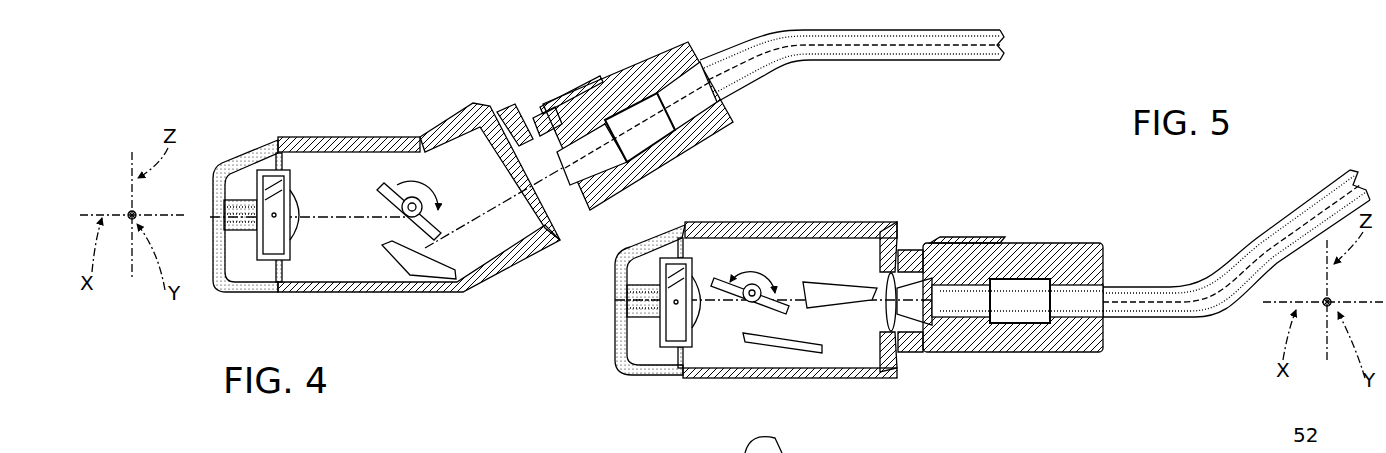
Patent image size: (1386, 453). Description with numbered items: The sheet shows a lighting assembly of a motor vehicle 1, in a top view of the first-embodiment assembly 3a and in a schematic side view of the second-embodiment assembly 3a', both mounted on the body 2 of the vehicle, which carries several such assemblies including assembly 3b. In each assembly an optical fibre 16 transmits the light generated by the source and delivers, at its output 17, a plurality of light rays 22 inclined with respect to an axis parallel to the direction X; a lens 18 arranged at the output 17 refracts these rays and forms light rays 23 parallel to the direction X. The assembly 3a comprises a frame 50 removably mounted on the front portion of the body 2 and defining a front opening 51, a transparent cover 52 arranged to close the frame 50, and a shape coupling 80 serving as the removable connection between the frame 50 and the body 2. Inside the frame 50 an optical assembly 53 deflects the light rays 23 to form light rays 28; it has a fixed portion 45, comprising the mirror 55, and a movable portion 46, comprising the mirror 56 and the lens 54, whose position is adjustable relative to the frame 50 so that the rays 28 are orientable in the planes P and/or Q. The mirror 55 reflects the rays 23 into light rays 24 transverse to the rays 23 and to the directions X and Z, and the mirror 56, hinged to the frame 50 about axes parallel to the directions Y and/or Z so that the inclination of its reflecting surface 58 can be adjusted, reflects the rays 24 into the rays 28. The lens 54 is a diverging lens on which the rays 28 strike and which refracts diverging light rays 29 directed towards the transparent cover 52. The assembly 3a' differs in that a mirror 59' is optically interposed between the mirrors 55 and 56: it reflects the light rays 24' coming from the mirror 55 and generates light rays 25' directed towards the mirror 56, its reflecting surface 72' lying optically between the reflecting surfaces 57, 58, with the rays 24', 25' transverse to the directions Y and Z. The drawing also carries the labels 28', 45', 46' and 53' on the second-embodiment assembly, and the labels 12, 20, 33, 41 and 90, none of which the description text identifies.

In FIG. 5, the motor vehicle 1 is at (1135, 428).
In FIG. 4, the body 2 is at (708, 160).
In FIG. 5, the body 2 is at (1032, 236).
In FIG. 4, the lighting assembly 3a is at (480, 63).
In FIG. 5, the lighting assembly 3a' is at (856, 158).
In FIG. 4, the assembly 3b is at (518, 452).
In FIG. 5, the mouthpiece 12 is at (1007, 452).
In FIG. 4, the optical fibre 16 is at (893, 48).
In FIG. 5, the optical fibre 16 is at (1239, 257).
In FIG. 4, the output 17 is at (570, 222).
In FIG. 5, the output 17 is at (915, 355).
In FIG. 4, the lens 18 is at (518, 224).
In FIG. 5, the lens 18 is at (900, 334).
In FIG. 4, the chamber 20 is at (428, 450).
In FIG. 4, the light rays 22 is at (532, 116).
In FIG. 5, the light rays 22 is at (930, 238).
In FIG. 4, the light rays 23 is at (477, 220).
In FIG. 5, the light rays 23 is at (878, 300).
In FIG. 4, the light rays 24 is at (378, 230).
In FIG. 5, the light rays 24' is at (835, 360).
In FIG. 5, the light rays 25' is at (782, 369).
In FIG. 4, the light rays 28 is at (335, 278).
In FIG. 5, the axis 28' is at (682, 361).
In FIG. 4, the light rays 29 is at (242, 192).
In FIG. 5, the light rays 29 is at (645, 283).
In FIG. 5, the element 33 is at (810, 452).
In FIG. 5, the element 41 is at (877, 444).
In FIG. 4, the fixed portion 45 is at (379, 300).
In FIG. 5, the flap 45' is at (877, 230).
In FIG. 4, the movable portion 46 is at (463, 207).
In FIG. 5, the arrow 46' is at (857, 368).
In FIG. 4, the frame 50 is at (334, 134).
In FIG. 5, the frame 50 is at (720, 224).
In FIG. 4, the front opening 51 is at (268, 252).
In FIG. 5, the front opening 51 is at (680, 303).
In FIG. 4, the transparent cover 52 is at (218, 245).
In FIG. 5, the transparent cover 52 is at (622, 323).
In FIG. 4, the optical assembly 53 is at (409, 136).
In FIG. 5, the valve arm 53' is at (756, 247).
In FIG. 4, the lens 54 is at (280, 176).
In FIG. 5, the lens 54 is at (663, 267).
In FIG. 4, the mirror 55 is at (443, 280).
In FIG. 5, the mirror 55 is at (810, 281).
In FIG. 4, the mirror 56 is at (386, 194).
In FIG. 5, the mirror 56 is at (716, 280).
In FIG. 4, the reflecting surface 57 is at (452, 256).
In FIG. 5, the reflecting surface 57 is at (852, 330).
In FIG. 4, the reflecting surface 58 is at (381, 205).
In FIG. 5, the reflecting surface 58 is at (784, 326).
In FIG. 5, the mirror 59' is at (757, 386).
In FIG. 5, the reflecting surface 72' is at (810, 288).
In FIG. 4, the shape coupling 80 is at (524, 138).
In FIG. 5, the shape coupling 80 is at (942, 243).
In FIG. 5, the element 90 is at (1210, 452).